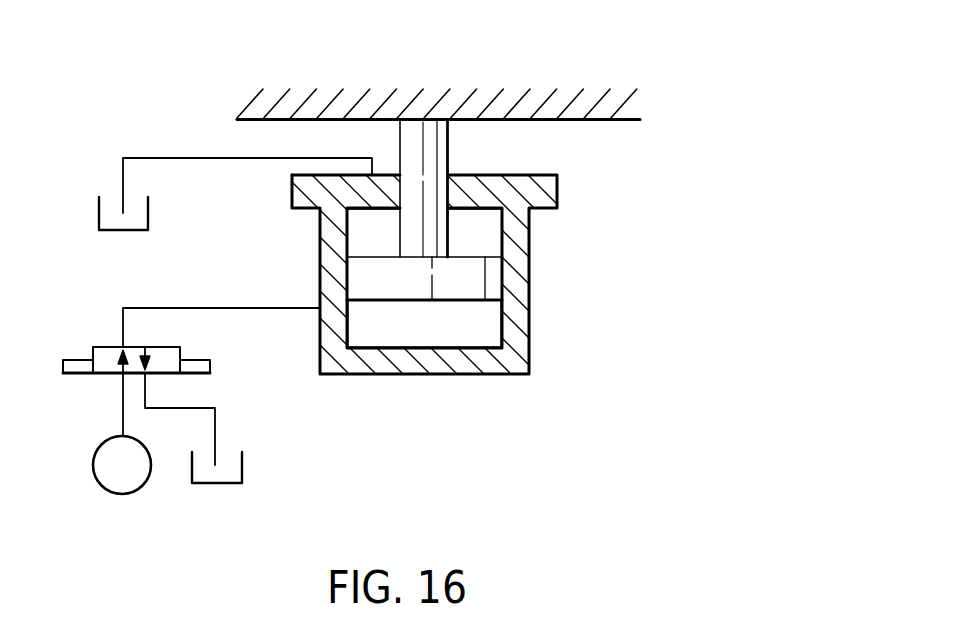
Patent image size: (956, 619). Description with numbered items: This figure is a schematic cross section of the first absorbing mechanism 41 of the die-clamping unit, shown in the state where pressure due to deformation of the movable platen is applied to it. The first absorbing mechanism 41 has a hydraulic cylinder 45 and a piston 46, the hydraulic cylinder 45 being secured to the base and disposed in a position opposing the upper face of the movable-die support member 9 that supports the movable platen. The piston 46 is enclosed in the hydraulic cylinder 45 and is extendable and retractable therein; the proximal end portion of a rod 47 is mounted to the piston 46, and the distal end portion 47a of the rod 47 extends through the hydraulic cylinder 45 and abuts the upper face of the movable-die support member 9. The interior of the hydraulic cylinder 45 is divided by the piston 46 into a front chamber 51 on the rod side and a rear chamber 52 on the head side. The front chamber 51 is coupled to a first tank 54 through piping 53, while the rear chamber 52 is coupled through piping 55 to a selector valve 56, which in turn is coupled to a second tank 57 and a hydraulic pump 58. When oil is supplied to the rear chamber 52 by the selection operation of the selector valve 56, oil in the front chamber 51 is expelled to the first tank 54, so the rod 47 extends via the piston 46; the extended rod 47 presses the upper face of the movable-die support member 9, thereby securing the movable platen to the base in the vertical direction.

The movable-die support member 9 is at (540, 100).
The first absorbing mechanism 41 is at (580, 398).
The hydraulic cylinder 45 is at (530, 314).
The piston 46 is at (475, 277).
The rod 47 is at (453, 153).
The distal end portion 47a is at (412, 139).
The front chamber 51 is at (486, 238).
The rear chamber 52 is at (397, 330).
The piping 53 is at (192, 157).
The first tank 54 is at (97, 213).
The piping 55 is at (210, 308).
The selector valve 56 is at (106, 347).
The second tank 57 is at (228, 474).
The hydraulic pump 58 is at (138, 476).